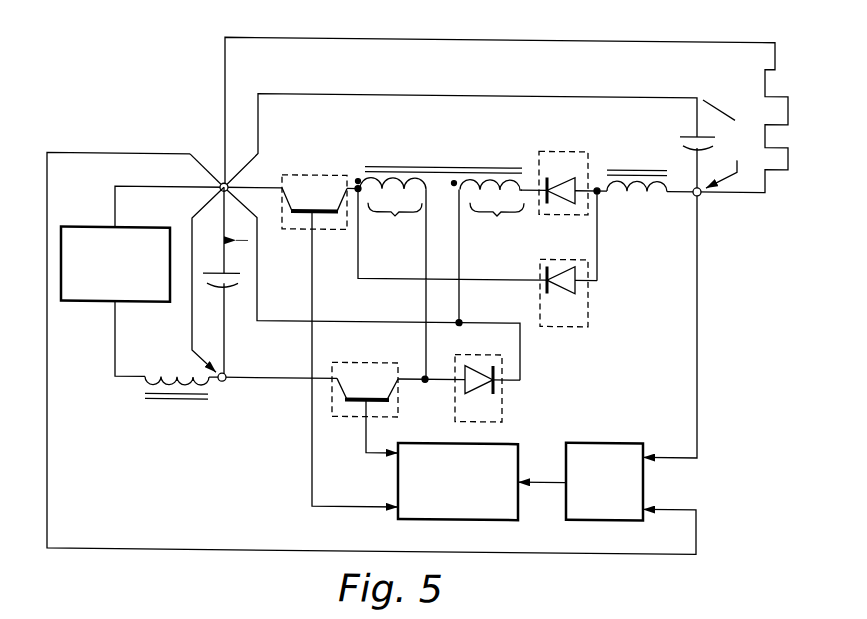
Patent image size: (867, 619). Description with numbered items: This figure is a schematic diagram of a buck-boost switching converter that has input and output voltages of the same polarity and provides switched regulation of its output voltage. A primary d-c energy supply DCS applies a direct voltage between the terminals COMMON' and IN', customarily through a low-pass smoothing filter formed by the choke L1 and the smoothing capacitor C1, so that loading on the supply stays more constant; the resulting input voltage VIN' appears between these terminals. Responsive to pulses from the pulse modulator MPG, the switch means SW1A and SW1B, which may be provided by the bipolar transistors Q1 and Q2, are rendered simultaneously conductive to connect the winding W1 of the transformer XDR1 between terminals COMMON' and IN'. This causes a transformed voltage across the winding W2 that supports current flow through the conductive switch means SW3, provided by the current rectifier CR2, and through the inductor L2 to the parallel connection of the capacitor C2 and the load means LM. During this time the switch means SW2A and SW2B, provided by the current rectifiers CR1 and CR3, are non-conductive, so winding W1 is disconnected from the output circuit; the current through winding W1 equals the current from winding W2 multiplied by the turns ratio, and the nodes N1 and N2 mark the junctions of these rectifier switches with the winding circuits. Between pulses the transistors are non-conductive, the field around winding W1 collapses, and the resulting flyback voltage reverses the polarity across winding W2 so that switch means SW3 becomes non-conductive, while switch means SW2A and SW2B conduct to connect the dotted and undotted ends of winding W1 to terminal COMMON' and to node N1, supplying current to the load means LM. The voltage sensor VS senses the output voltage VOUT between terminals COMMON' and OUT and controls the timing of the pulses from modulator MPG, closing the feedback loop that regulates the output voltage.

The load means LM is at (765, 68).
The common terminal COMMON' is at (181, 180).
The primary d-c energy supply DCS is at (131, 226).
The smoothing capacitor C1 is at (217, 266).
The input voltage VIN' is at (201, 279).
The input terminal IN' is at (234, 371).
The choke L1 is at (177, 400).
The switch means SW1A is at (340, 332).
The bipolar transistor Q1 is at (347, 172).
The transformer XDR1 is at (451, 261).
The winding W1 is at (451, 279).
The winding W2 is at (488, 253).
The switch means SW3 is at (563, 173).
The current rectifier CR2 is at (588, 145).
The node N1 is at (599, 188).
The inductor L2 is at (637, 172).
The capacitor C2 is at (680, 130).
The output voltage VOUT is at (729, 144).
The output terminal OUT is at (699, 189).
The switch means SW2A is at (588, 293).
The current rectifier CR1 is at (596, 298).
The switch means SW1B is at (365, 397).
The bipolar transistor Q2 is at (367, 415).
The node N2 is at (426, 378).
The switch means SW2B is at (480, 380).
The current rectifier CR3 is at (478, 394).
The pulse modulator MPG is at (509, 439).
The voltage sensor VS is at (633, 437).